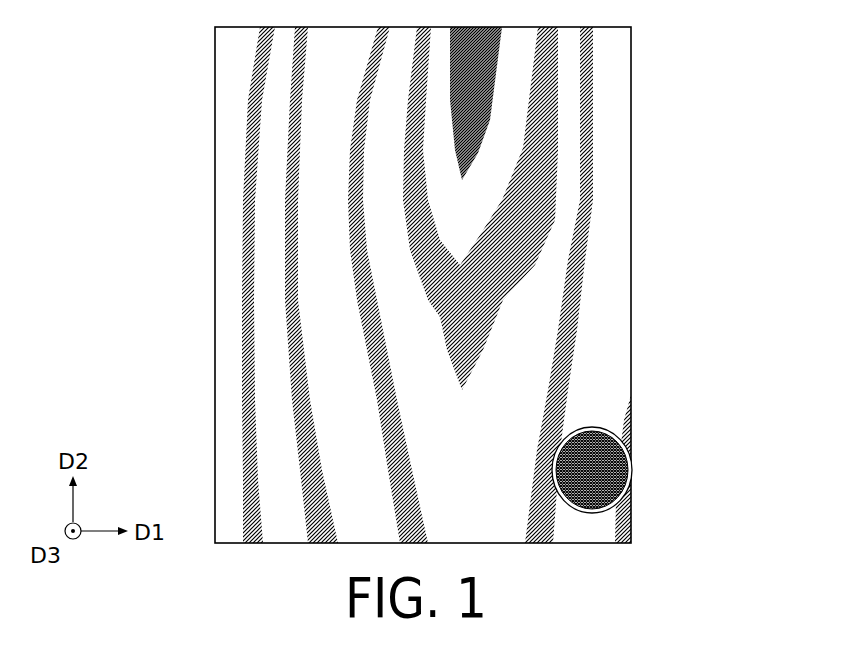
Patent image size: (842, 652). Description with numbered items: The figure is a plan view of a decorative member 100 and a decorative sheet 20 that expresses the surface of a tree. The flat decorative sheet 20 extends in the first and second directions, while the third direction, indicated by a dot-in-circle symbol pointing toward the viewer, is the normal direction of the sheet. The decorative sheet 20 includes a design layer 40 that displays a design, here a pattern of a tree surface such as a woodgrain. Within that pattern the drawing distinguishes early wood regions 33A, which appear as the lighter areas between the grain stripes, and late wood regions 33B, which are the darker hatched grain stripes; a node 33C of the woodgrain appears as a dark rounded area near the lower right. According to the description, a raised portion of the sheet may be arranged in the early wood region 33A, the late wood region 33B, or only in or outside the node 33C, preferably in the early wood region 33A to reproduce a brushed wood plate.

The decorative sheet 100 is at (383, 285).
The decorative sheet 20 is at (413, 285).
The early wood region 33A is at (438, 318).
The late wood region 33B is at (350, 240).
The node 33C is at (633, 470).
The design layer 40 is at (603, 341).